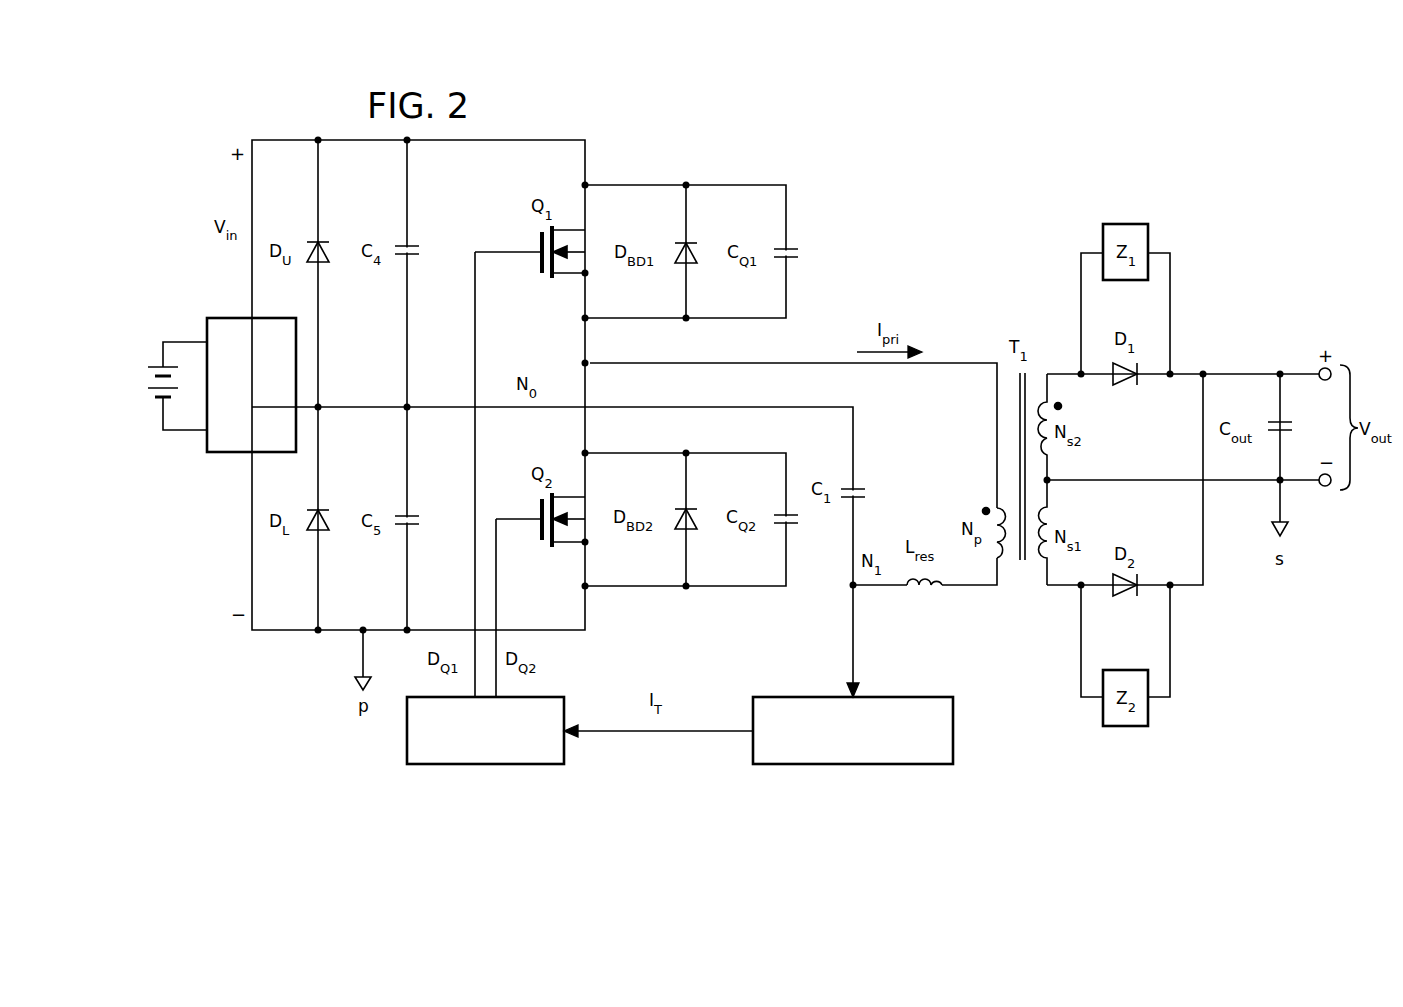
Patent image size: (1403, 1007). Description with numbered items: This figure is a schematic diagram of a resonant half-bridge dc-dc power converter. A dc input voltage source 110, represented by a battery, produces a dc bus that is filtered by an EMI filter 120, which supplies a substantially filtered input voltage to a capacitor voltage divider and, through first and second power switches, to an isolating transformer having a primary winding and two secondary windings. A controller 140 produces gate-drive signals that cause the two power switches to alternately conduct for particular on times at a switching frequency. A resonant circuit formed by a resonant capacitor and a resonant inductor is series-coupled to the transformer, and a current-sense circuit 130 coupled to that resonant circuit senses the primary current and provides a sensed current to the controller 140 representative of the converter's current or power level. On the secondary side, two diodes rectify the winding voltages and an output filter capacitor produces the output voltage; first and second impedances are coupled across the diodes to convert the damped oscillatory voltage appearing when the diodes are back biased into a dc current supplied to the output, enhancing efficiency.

The dc input voltage source 110 is at (143, 385).
The EMI filter 120 is at (228, 318).
The current-sense circuit 130 is at (865, 765).
The controller 140 is at (487, 765).